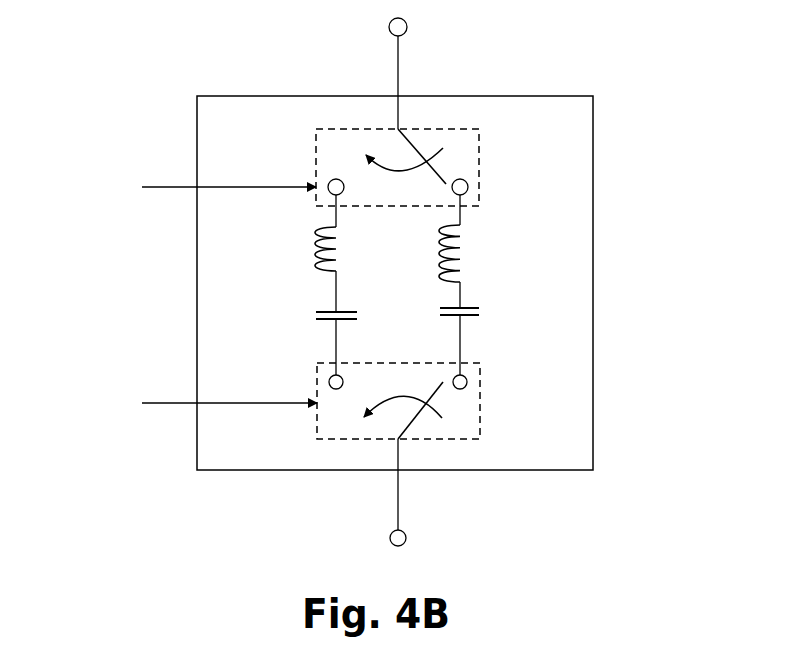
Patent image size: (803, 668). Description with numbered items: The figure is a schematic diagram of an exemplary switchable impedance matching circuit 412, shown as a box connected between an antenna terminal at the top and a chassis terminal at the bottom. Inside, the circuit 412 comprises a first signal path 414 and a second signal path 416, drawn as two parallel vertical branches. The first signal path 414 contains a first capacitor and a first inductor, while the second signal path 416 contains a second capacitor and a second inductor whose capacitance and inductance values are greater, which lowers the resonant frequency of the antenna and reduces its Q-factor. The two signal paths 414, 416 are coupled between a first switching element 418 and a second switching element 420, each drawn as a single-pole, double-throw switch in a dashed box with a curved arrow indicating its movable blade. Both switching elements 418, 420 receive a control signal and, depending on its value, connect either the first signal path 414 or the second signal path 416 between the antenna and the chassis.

The switchable impedance matching circuit 412 is at (325, 283).
The first signal path 414 is at (332, 163).
The second signal path 416 is at (468, 163).
The first switching element 418 is at (334, 439).
The second switching element 420 is at (403, 155).